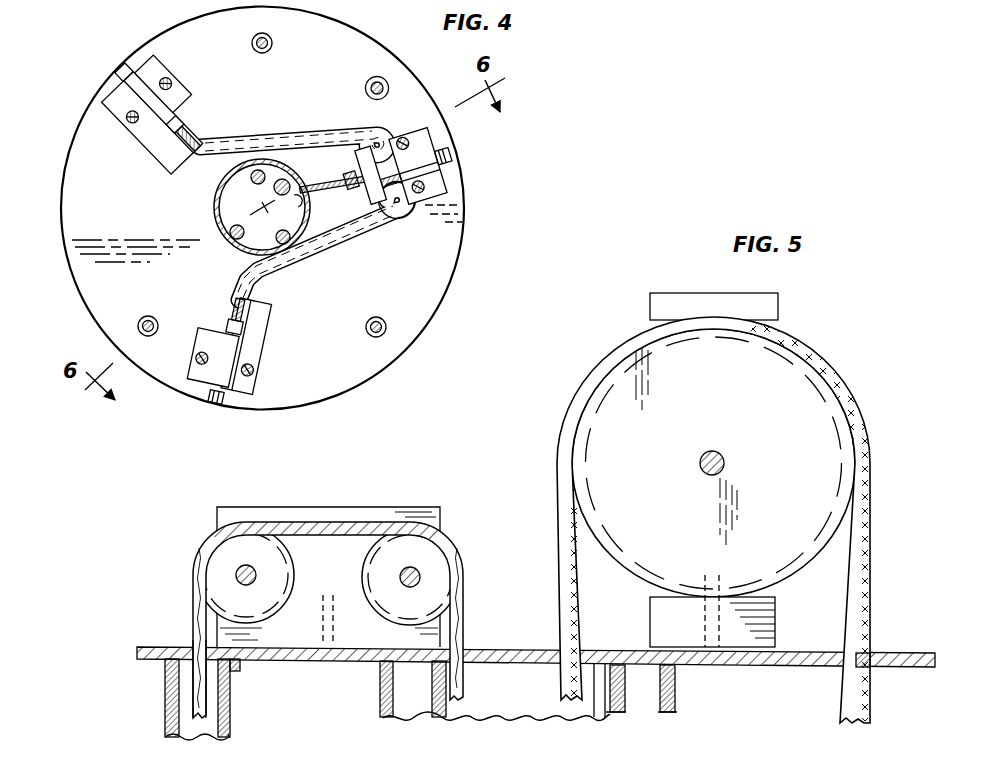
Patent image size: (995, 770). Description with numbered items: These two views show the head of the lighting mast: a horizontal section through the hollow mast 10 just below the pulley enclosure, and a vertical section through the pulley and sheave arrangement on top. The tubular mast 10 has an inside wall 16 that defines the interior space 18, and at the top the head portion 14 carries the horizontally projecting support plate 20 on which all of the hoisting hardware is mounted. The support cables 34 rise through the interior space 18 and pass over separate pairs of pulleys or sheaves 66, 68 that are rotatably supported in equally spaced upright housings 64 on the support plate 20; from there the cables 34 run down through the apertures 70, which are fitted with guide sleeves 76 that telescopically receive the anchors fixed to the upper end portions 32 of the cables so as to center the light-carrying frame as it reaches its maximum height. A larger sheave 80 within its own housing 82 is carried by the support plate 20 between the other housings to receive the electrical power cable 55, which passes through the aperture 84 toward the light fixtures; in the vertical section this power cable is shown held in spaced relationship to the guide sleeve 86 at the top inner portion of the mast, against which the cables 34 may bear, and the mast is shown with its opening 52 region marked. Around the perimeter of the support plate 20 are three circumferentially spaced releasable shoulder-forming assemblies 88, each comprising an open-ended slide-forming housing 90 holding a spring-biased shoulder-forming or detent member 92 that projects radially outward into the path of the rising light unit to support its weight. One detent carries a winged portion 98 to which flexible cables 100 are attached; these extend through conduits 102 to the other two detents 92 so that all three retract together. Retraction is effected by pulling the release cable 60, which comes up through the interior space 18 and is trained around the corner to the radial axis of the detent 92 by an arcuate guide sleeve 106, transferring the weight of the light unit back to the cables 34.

In FIG. 5, the hollow mast 10 is at (378, 702).
In FIG. 4, the head portion 14 is at (216, 210).
In FIG. 5, the head portion 14 is at (676, 690).
In FIG. 5, the inside wall 16 is at (662, 713).
In FIG. 5, the interior space 18 is at (522, 718).
In FIG. 4, the support plate 20 is at (368, 40).
In FIG. 5, the support plate 20 is at (896, 653).
In FIG. 4, the upper end portions of the cables 32 is at (268, 40).
In FIG. 5, the upper end portions of the cables 32 is at (168, 676).
In FIG. 4, the cables 34 is at (258, 212).
In FIG. 5, the cables 34 is at (466, 632).
In FIG. 4, the opening 52 is at (303, 188).
In FIG. 4, the power cable 55 is at (389, 90).
In FIG. 5, the power cable 55 is at (868, 525).
In FIG. 4, the release cable 60 is at (298, 203).
In FIG. 5, the upright housings 64 is at (322, 507).
In FIG. 5, the pulley or sheave 66 is at (440, 563).
In FIG. 5, the pulley or sheave 68 is at (282, 580).
In FIG. 4, the apertures 70 is at (272, 45).
In FIG. 5, the apertures 70 is at (196, 640).
In FIG. 5, the guide sleeves 76 is at (232, 716).
In FIG. 5, the larger sheave 80 is at (805, 395).
In FIG. 5, the housing 82 is at (778, 309).
In FIG. 4, the aperture 84 is at (382, 86).
In FIG. 5, the aperture 84 is at (866, 655).
In FIG. 5, the guide sleeve 86 is at (440, 708).
In FIG. 4, the releasable shoulder-forming assemblies 88 is at (158, 168).
In FIG. 4, the slide-forming housing 90 is at (165, 72).
In FIG. 4, the shoulder-forming or detent member 92 is at (118, 68).
In FIG. 4, the winged portion 98 is at (410, 210).
In FIG. 4, the flexible cables 100 is at (196, 138).
In FIG. 4, the conduits 102 is at (325, 247).
In FIG. 4, the arcuate guide sleeve 106 is at (285, 135).